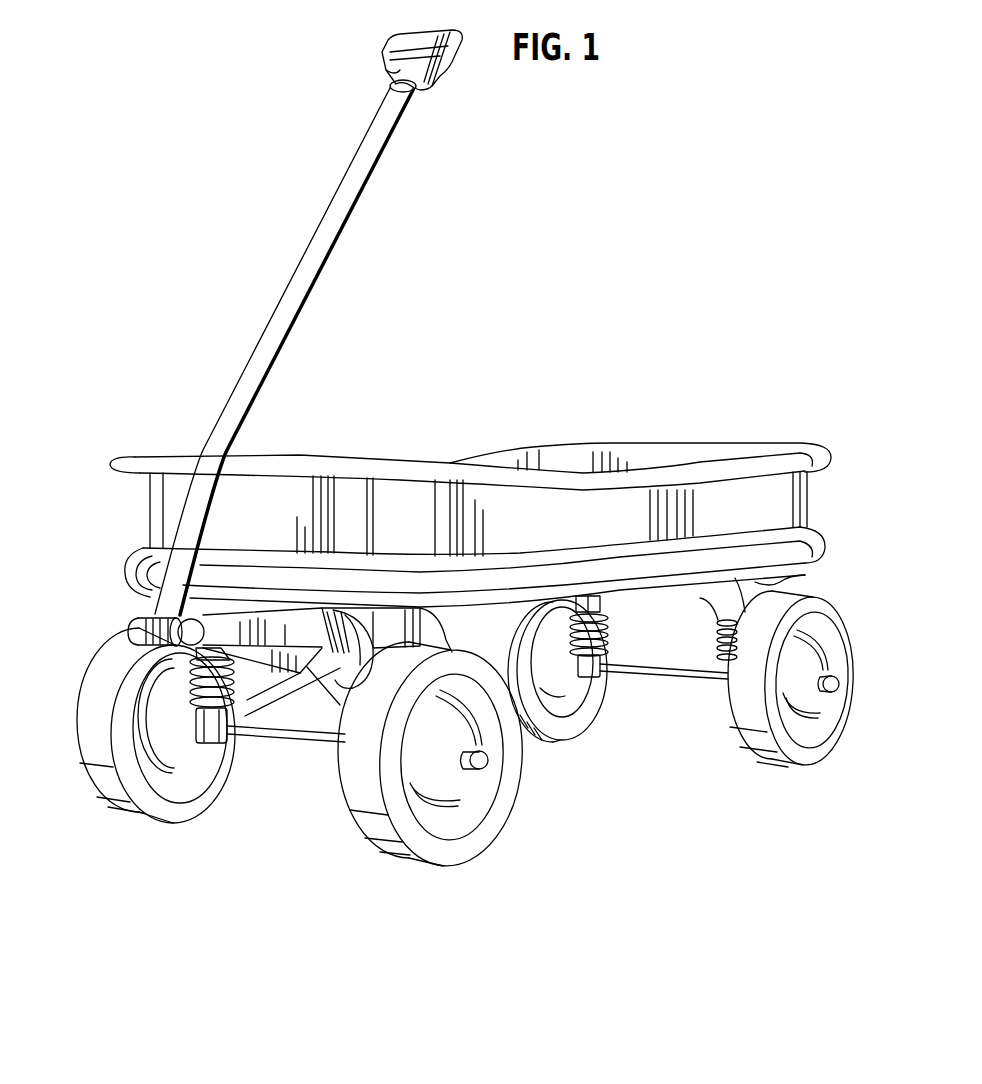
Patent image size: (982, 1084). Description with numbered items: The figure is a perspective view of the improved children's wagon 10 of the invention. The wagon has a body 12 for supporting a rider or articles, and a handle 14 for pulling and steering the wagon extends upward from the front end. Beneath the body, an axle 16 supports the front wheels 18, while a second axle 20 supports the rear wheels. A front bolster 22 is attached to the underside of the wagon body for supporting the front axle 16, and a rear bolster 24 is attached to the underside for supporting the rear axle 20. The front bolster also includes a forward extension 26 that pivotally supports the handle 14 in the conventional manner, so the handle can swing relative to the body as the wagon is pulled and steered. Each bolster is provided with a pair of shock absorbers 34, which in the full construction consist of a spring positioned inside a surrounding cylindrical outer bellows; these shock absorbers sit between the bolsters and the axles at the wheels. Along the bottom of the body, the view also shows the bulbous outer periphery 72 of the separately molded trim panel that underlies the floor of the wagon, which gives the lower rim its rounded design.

The children's wagon 10 is at (591, 840).
The body 12 is at (808, 498).
The handle 14 is at (275, 343).
The axle 16 is at (246, 735).
The front wheels 18 is at (153, 820).
The axle 20 is at (683, 677).
The front bolster 22 is at (292, 748).
The rear bolster 24 is at (790, 580).
The forward extension 26 is at (140, 630).
The shock absorbers 34 is at (168, 665).
The bulbous outer periphery 72 is at (814, 546).